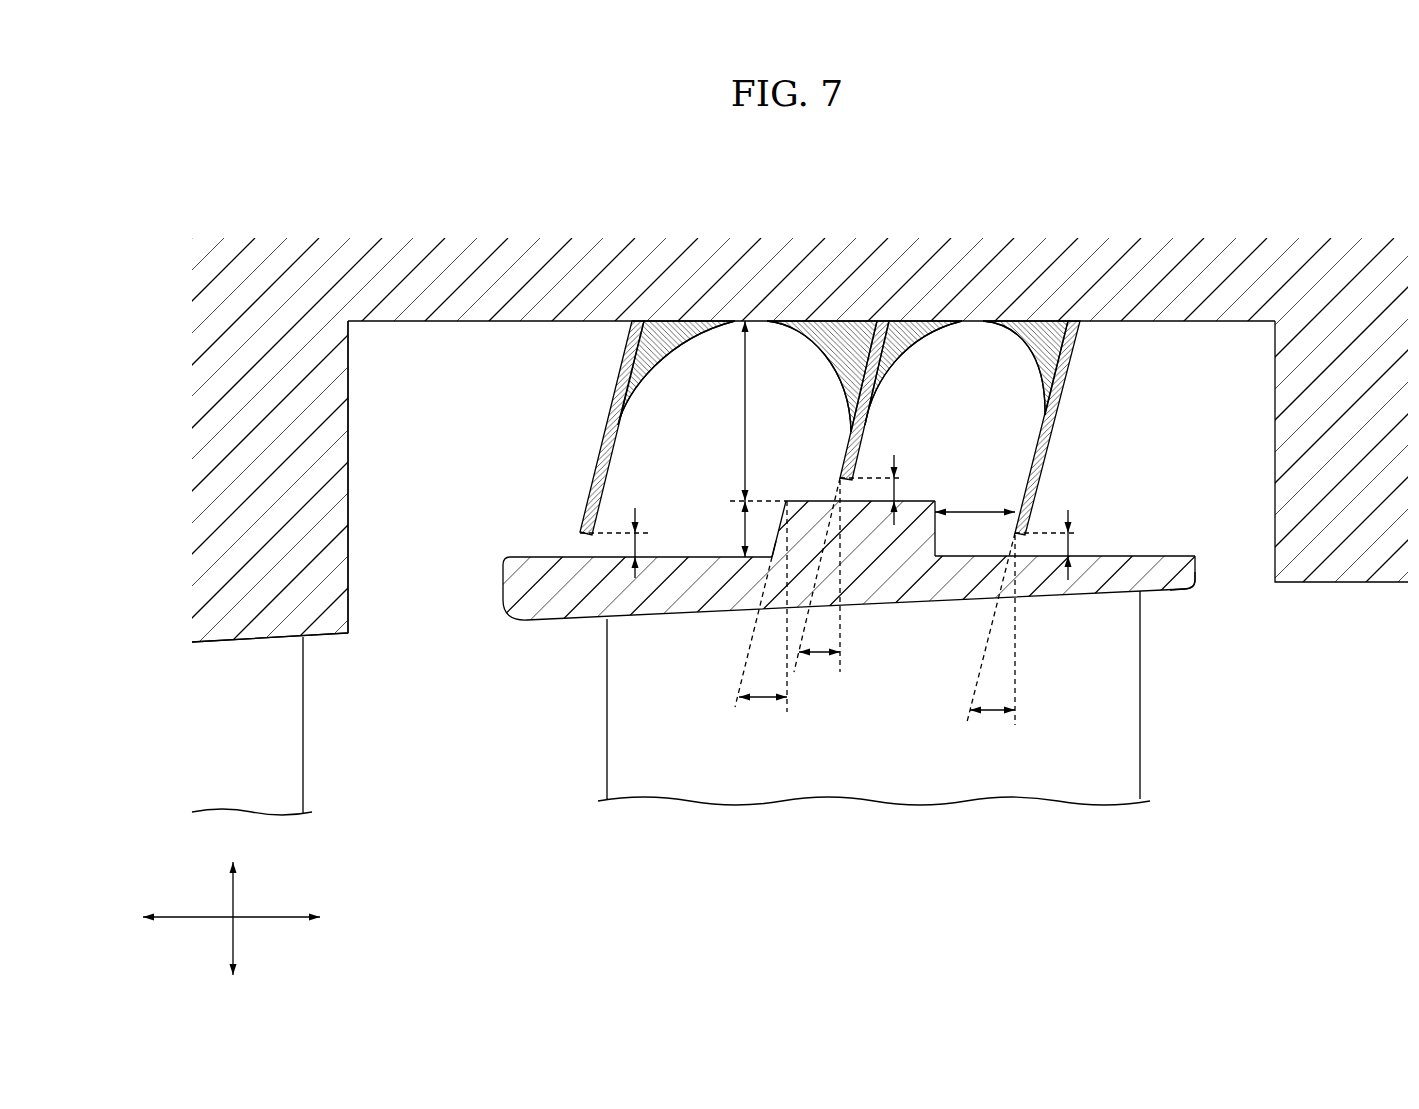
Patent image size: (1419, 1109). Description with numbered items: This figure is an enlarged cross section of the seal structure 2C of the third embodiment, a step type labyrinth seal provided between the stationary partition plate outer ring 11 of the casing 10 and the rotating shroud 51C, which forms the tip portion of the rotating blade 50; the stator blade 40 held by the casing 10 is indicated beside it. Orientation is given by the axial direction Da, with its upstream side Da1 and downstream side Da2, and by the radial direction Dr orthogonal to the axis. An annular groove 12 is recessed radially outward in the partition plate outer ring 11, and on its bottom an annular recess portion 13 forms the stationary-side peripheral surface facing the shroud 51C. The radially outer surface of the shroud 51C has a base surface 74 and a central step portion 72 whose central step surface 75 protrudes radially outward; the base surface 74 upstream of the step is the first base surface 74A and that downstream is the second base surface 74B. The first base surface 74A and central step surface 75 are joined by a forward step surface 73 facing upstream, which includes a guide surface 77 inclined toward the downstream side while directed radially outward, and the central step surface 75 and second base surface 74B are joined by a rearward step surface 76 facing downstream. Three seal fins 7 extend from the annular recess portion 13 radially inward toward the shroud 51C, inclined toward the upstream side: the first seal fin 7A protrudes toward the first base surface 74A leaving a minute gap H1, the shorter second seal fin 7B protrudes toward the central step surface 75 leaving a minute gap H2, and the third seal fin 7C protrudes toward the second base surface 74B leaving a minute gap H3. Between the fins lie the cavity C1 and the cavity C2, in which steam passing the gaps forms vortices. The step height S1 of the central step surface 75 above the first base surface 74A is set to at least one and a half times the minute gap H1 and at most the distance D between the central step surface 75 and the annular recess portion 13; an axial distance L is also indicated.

The casing 10 is at (292, 204).
The annular recess portion 13 is at (500, 325).
The partition plate outer ring 11 is at (215, 580).
The seal structure 2C is at (387, 444).
The annular groove 12 is at (427, 618).
The stator blade 40 is at (227, 712).
The rotating blade 50 is at (1140, 722).
The seal fin 7 is at (869, 351).
The first seal fin 7A is at (608, 412).
The second seal fin 7B is at (866, 427).
The third seal fin 7C is at (1050, 452).
The cavity C1 is at (772, 342).
The cavity C2 is at (983, 343).
The base surface 74 is at (709, 490).
The first base surface 74A is at (690, 557).
The second base surface 74B is at (1183, 555).
The central step surface 75 is at (815, 501).
The guide surface 77 is at (776, 531).
The rearward step surface 76 is at (940, 538).
The forward step surface 73 is at (768, 544).
The central step portion 72 is at (864, 535).
The shroud 51C is at (1193, 588).
The distance D is at (737, 411).
The height of the central step surface S1 is at (749, 529).
The minute gap H1 is at (633, 545).
The minute gap H2 is at (895, 488).
The minute gap H3 is at (1069, 530).
The distance L is at (975, 497).
The axial direction Da is at (280, 915).
The upstream side Da1 is at (118, 922).
The downstream side Da2 is at (349, 922).
The radial direction Dr is at (230, 945).